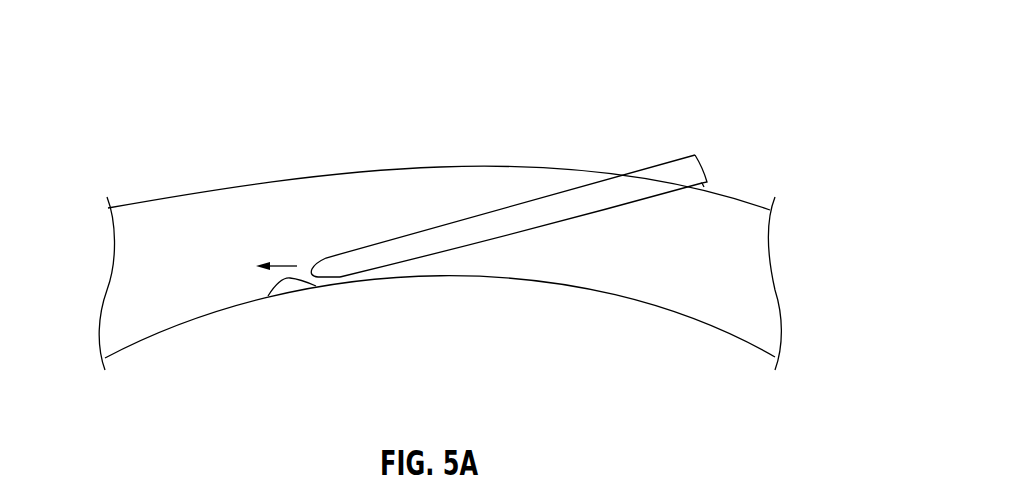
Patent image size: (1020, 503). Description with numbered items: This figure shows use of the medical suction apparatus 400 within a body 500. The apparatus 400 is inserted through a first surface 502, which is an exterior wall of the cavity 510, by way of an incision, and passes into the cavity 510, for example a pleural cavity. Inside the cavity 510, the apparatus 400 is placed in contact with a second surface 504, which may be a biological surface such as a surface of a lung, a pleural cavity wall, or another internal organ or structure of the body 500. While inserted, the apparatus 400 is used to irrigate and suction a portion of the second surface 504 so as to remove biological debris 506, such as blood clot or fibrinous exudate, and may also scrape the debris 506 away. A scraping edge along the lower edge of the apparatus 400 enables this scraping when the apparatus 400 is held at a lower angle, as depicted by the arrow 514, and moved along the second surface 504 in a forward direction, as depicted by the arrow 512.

The body 500 is at (119, 47).
The first surface 502 is at (497, 167).
The second surface 504 is at (180, 321).
The biological debris 506 is at (290, 288).
The cavity 510 is at (174, 211).
The arrow 512 is at (278, 262).
The arrow 514 is at (605, 102).
The apparatus 400 is at (350, 222).